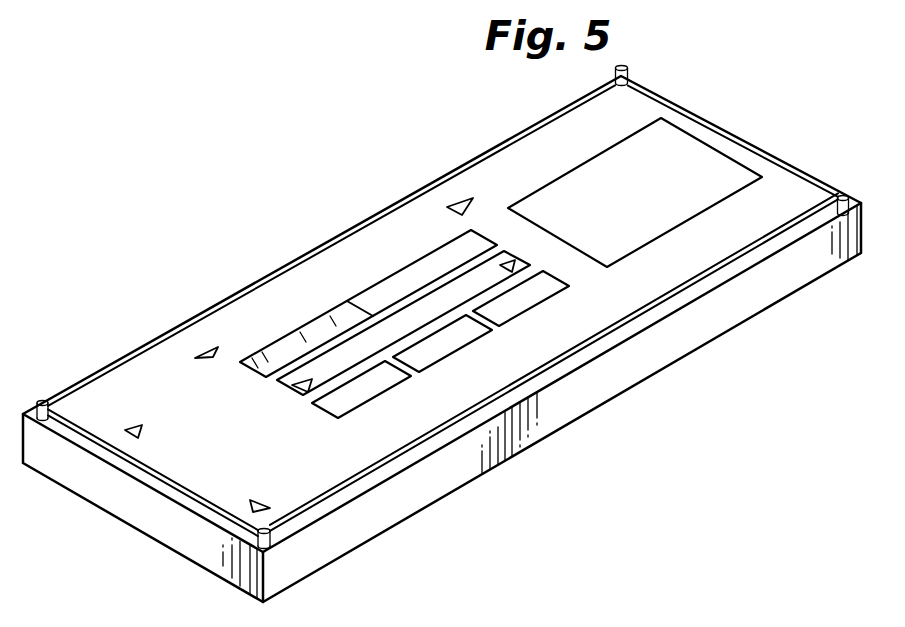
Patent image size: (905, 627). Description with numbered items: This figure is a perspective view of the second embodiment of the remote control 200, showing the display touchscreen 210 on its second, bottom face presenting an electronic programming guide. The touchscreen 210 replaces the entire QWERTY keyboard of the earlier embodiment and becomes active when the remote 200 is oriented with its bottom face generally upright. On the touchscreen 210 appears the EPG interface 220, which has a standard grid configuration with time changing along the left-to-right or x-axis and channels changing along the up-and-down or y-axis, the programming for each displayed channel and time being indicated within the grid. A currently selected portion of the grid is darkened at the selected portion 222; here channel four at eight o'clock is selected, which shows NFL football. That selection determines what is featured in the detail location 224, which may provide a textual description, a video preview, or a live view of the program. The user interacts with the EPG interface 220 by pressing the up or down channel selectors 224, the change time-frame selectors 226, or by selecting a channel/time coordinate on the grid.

The remote control 200 is at (600, 382).
The display touchscreen 210 is at (540, 153).
The EPG interface 220 is at (382, 248).
The selected portion 222 is at (278, 333).
The detail location 224 is at (708, 127).
The change time-frame selectors 226 is at (462, 190).